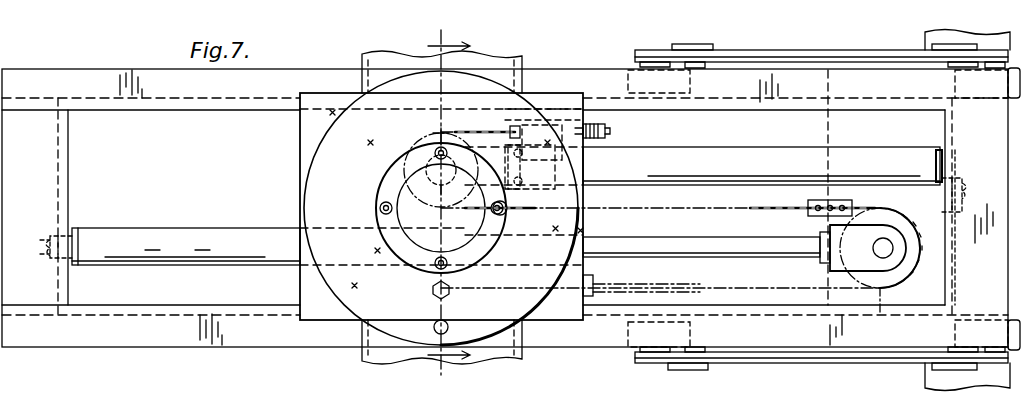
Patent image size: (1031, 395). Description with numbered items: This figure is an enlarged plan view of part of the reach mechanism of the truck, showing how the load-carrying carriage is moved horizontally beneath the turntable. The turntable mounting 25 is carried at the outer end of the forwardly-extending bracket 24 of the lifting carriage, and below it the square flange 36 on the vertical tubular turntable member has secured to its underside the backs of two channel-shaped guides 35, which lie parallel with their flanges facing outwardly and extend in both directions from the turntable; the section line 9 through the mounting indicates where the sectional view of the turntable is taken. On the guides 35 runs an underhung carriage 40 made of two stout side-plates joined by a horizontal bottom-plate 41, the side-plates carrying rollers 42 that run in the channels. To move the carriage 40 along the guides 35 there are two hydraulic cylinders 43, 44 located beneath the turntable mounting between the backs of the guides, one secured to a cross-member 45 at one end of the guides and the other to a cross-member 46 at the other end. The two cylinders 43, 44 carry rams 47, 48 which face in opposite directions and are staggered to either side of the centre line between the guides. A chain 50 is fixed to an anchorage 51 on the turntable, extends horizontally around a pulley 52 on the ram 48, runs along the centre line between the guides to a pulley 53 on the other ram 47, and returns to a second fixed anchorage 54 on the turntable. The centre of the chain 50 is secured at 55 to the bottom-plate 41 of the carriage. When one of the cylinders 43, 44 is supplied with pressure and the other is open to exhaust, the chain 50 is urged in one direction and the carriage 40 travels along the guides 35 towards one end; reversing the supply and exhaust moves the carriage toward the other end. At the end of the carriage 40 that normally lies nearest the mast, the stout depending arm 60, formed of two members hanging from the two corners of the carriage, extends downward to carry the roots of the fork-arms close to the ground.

The section line 9 is at (437, 202).
The forwardly-extending bracket 24 is at (483, 75).
The turntable mounting 25 is at (371, 303).
The channel-shaped guides 35 is at (275, 75).
The square flange 36 is at (307, 294).
The underhung carriage 40 is at (742, 53).
The horizontal bottom-plate 41 is at (843, 133).
The rollers 42 is at (636, 82).
The hydraulic cylinder 43 is at (175, 240).
The hydraulic cylinder 44 is at (719, 166).
The cross-member 45 is at (56, 210).
The cross-member 46 is at (963, 147).
The ram 47 is at (708, 247).
The ram 48 is at (536, 122).
The chain 50 is at (790, 210).
The anchorage 51 is at (610, 131).
The pulley 52 is at (420, 156).
The pulley 53 is at (880, 305).
The second fixed anchorage 54 is at (595, 283).
The chain securing point 55 is at (822, 205).
The depending arm 60 is at (935, 378).